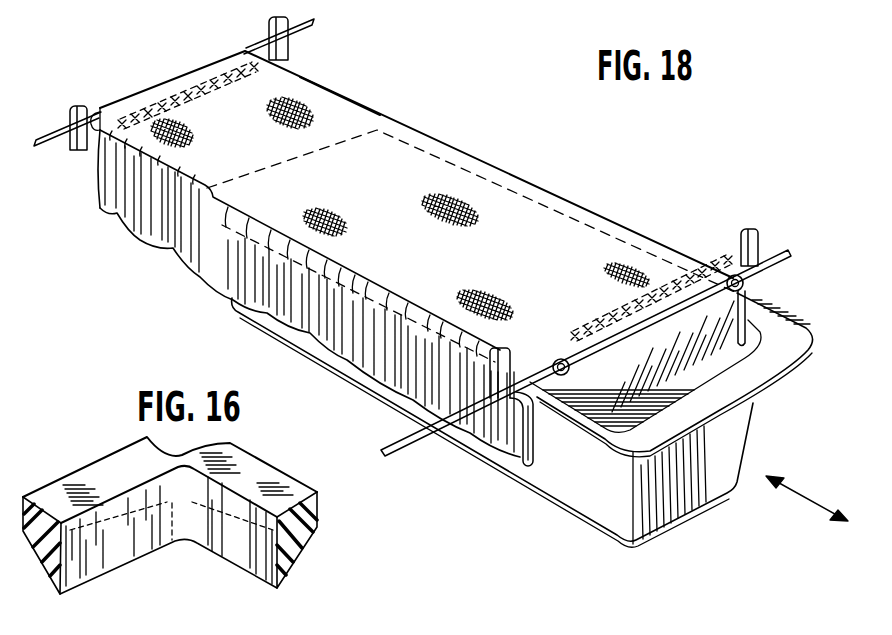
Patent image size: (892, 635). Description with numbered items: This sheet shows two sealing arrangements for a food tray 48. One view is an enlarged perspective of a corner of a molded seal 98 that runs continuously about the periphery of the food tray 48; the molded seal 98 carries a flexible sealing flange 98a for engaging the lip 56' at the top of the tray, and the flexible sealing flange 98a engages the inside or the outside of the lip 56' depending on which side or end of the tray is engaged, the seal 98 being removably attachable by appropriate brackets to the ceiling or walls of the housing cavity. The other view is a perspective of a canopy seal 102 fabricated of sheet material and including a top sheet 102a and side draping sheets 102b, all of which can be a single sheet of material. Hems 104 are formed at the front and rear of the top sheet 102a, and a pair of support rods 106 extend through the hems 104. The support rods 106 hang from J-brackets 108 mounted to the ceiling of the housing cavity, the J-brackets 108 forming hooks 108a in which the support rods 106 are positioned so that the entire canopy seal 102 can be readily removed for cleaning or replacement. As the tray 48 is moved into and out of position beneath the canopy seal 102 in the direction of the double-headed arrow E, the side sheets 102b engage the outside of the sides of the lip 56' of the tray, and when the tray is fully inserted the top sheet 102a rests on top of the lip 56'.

In FIG. 18, the canopy seal 102 is at (440, 134).
In FIG. 18, the top sheet 102a is at (333, 103).
In FIG. 18, the side draping sheets 102b is at (170, 235).
In FIG. 18, the hems 104 is at (200, 77).
In FIG. 18, the support rods 106 is at (46, 150).
In FIG. 18, the J-brackets 108 is at (91, 105).
In FIG. 18, the hooks 108a is at (762, 278).
In FIG. 18, the food tray 48 is at (598, 532).
In FIG. 18, the lip 56' is at (671, 375).
In FIG. 18, the double-headed arrow E is at (805, 502).
In FIG. 16, the molded seal 98 is at (320, 515).
In FIG. 16, the flexible sealing flange 98a is at (240, 560).